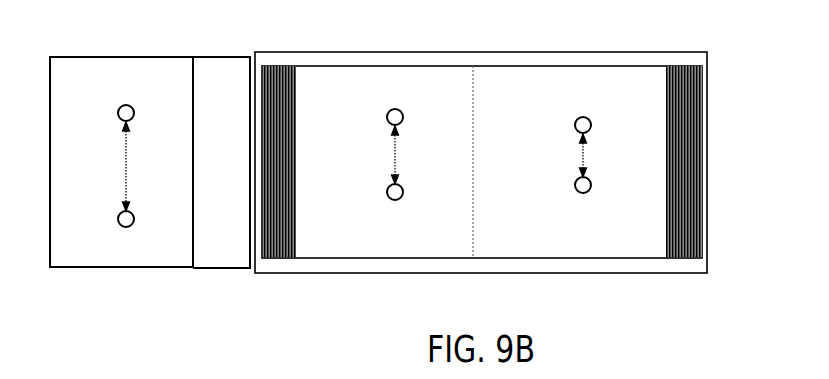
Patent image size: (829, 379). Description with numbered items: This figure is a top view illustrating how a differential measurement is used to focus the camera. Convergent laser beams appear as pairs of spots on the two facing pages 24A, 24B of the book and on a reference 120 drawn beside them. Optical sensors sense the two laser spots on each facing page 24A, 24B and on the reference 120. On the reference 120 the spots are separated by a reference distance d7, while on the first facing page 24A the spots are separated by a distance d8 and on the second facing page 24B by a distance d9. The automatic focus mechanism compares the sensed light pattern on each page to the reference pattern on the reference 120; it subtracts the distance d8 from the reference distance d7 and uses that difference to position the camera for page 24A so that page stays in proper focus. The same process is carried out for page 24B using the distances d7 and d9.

The reference 120 is at (113, 57).
The facing page 24A is at (357, 66).
The facing page 24B is at (580, 66).
The reference distance d7 is at (108, 166).
The distance between the laser spots d8 is at (378, 154).
The distance between the laser spots d9 is at (570, 155).